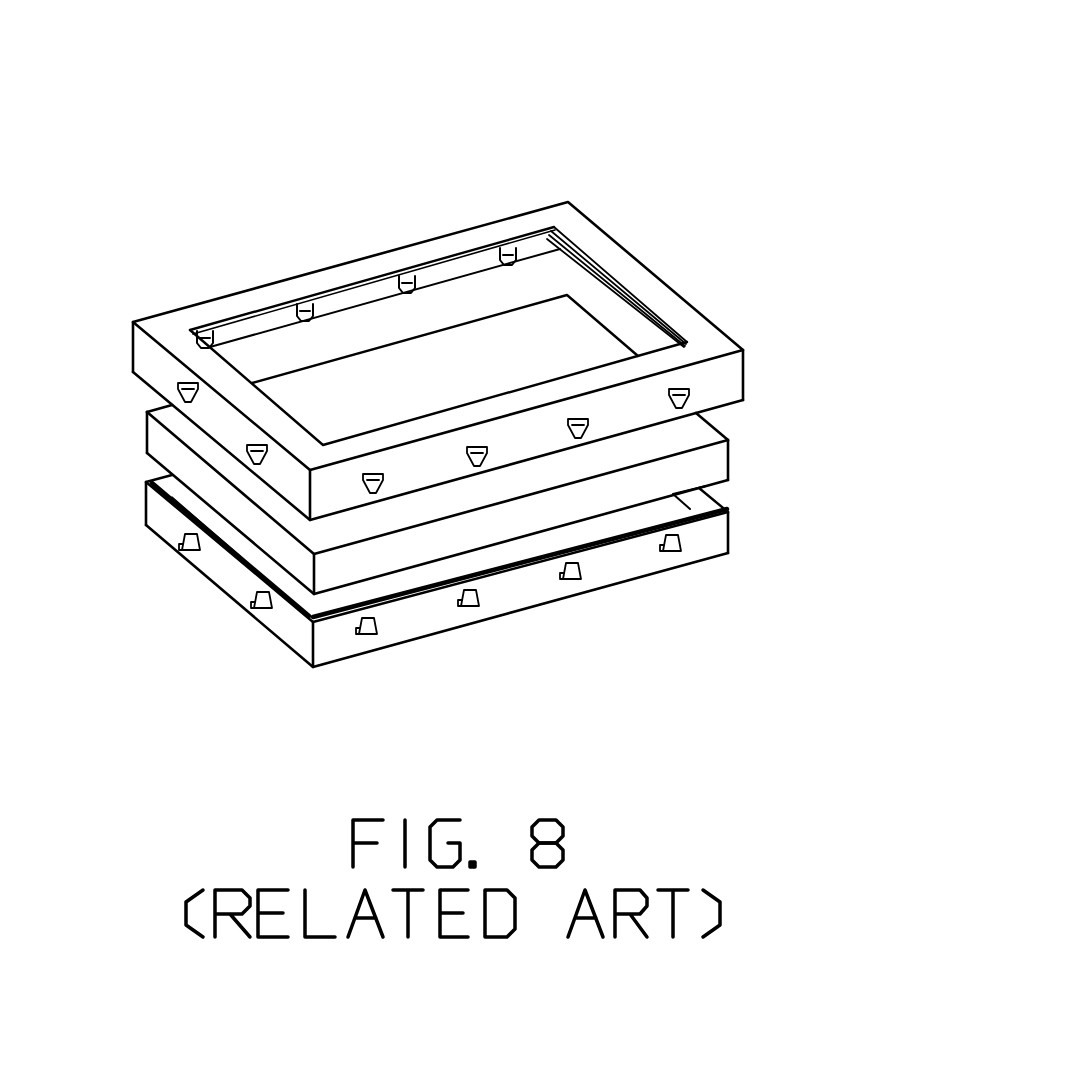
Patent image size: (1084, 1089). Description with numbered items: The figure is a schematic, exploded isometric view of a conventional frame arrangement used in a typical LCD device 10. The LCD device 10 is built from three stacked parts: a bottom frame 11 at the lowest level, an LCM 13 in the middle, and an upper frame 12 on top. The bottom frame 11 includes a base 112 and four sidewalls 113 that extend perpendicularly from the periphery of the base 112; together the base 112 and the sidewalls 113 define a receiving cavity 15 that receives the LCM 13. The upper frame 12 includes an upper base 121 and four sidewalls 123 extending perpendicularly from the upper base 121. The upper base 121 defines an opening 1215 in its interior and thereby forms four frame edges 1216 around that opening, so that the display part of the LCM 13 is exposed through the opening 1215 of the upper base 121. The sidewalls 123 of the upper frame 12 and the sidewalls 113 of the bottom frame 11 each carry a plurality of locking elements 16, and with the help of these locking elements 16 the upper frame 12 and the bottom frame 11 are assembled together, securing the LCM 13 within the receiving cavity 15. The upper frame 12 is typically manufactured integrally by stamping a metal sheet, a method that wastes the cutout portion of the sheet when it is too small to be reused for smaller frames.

The LCD device 10 is at (496, 385).
The upper frame 12 is at (888, 292).
The upper base 121 is at (708, 343).
The sidewalls 123 is at (718, 387).
The opening 1215 is at (534, 248).
The frame edges 1216 is at (640, 292).
The LCM 13 is at (160, 440).
The bottom frame 11 is at (888, 463).
The base 112 is at (662, 514).
The sidewalls 113 is at (710, 542).
The receiving cavity 15 is at (205, 517).
The locking elements 16 is at (480, 608).